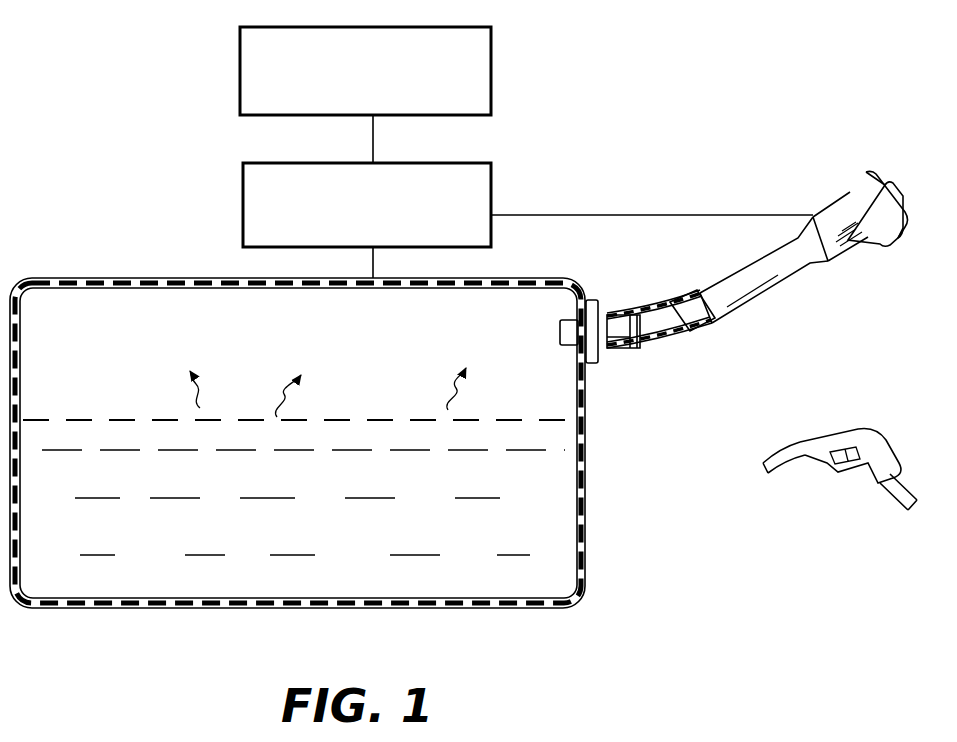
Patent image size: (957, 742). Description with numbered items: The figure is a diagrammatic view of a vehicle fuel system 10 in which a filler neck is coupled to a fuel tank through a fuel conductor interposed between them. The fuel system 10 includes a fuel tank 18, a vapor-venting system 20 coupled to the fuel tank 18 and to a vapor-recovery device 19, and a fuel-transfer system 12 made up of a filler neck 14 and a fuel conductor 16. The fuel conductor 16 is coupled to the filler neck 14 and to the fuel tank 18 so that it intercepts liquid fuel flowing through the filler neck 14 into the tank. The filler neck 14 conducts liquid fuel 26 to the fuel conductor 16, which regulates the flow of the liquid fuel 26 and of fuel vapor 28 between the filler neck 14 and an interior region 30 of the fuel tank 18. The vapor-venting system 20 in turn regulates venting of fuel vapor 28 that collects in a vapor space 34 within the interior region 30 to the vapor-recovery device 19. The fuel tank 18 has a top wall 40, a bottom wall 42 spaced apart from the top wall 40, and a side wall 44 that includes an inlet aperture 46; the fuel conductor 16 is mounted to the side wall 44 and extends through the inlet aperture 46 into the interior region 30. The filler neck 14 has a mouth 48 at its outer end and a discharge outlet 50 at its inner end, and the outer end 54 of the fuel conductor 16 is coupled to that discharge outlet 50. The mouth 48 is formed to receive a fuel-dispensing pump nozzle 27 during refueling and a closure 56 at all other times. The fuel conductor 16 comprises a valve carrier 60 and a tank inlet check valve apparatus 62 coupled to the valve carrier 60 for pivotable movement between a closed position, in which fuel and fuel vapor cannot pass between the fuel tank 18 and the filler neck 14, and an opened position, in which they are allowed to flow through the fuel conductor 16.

The fuel system 10 is at (150, 190).
The fuel-transfer system 12 is at (727, 367).
The filler neck 14 is at (757, 330).
The fuel conductor 16 is at (596, 378).
The fuel tank 18 is at (60, 268).
The vapor-recovery device 19 is at (492, 90).
The vapor-venting system 20 is at (470, 163).
The liquid fuel 26 is at (352, 420).
The fuel-dispensing pump nozzle 27 is at (840, 485).
The fuel vapor 28 is at (290, 391).
The interior region 30 is at (217, 370).
The vapor space 34 is at (133, 323).
The top wall 40 is at (510, 280).
The bottom wall 42 is at (511, 614).
The side wall 44 is at (590, 535).
The inlet aperture 46 is at (563, 343).
The mouth 48 is at (863, 262).
The discharge outlet 50 is at (615, 363).
The outer end 54 is at (623, 308).
The closure 56 is at (866, 170).
The valve carrier 60 is at (604, 298).
The tank inlet check valve apparatus 62 is at (555, 338).